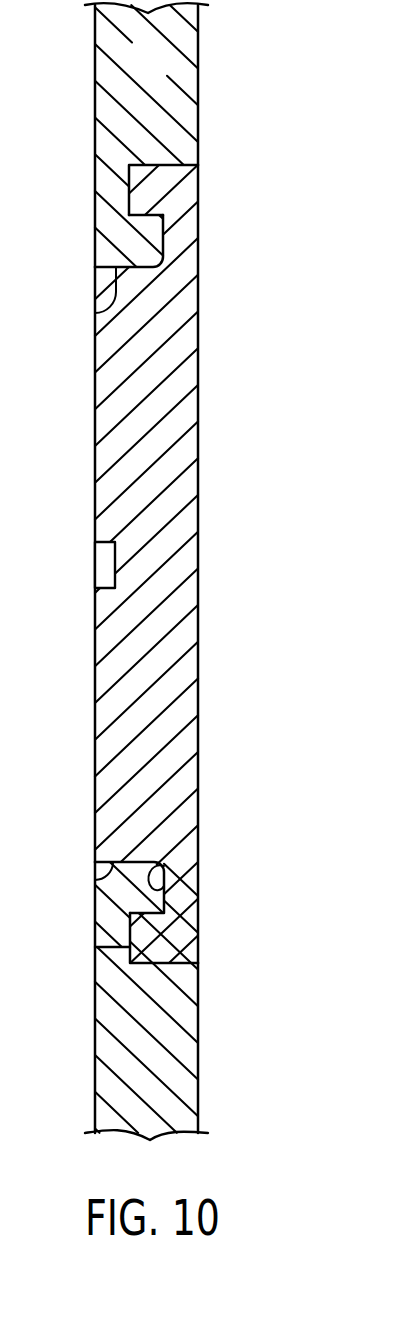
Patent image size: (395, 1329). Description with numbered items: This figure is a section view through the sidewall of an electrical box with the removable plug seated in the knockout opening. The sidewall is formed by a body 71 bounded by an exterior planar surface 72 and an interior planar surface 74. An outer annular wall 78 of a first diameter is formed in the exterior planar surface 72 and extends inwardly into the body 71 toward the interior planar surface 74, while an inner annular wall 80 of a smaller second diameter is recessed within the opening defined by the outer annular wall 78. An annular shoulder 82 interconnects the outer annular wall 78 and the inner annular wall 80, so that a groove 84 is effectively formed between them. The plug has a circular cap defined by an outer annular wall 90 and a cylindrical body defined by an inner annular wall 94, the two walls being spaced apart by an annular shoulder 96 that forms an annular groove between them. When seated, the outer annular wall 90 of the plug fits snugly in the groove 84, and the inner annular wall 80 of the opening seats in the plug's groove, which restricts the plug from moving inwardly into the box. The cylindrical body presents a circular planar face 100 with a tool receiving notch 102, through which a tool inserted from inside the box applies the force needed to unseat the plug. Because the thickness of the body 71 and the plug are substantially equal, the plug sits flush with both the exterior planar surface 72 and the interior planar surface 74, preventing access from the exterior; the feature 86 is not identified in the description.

The body 71 is at (160, 70).
The exterior planar surface 72 is at (200, 88).
The interior planar surface 74 is at (95, 66).
The outer annular wall 78 is at (148, 187).
The inner annular wall 80 is at (172, 237).
The annular shoulder 82 is at (170, 208).
The groove 84 is at (150, 194).
The seal 86 is at (95, 312).
The outer annular wall 90 is at (95, 947).
The inner annular wall 94 is at (95, 880).
The annular shoulder 96 is at (160, 876).
The planar face 100 is at (95, 724).
The tool receiving notch 102 is at (112, 558).